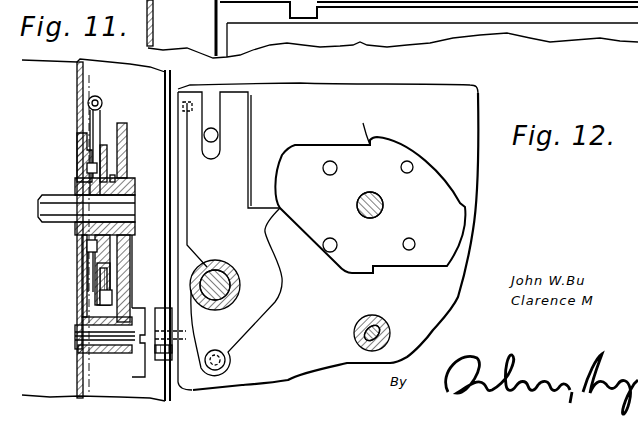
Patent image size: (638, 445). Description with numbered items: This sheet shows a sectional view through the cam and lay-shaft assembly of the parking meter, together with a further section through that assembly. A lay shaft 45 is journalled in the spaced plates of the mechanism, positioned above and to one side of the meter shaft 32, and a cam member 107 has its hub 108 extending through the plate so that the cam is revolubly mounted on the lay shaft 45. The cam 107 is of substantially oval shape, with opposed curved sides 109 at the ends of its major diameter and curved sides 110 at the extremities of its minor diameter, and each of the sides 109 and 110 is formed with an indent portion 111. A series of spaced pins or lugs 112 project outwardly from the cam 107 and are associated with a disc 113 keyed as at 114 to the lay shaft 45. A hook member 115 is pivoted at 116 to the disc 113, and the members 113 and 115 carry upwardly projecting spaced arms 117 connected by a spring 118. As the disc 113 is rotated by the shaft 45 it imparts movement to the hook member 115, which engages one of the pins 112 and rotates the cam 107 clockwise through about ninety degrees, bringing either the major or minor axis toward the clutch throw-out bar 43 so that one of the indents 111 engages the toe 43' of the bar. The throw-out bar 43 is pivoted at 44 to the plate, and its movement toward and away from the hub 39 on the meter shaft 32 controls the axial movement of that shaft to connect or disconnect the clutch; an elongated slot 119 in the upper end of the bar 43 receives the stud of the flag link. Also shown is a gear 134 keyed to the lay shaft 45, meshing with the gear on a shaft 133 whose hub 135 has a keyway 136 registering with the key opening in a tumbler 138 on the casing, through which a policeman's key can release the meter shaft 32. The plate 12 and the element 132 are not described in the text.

In FIG. 11, the plate 12 is at (76, 77).
In FIG. 12, the meter shaft 32 is at (218, 262).
In FIG. 12, the hub 39 is at (238, 285).
In FIG. 12, the clutch throw-out bar 43 is at (229, 179).
In FIG. 12, the toe 43' is at (242, 292).
In FIG. 12, the pivot 44 is at (226, 362).
In FIG. 11, the lay shaft 45 is at (57, 198).
In FIG. 12, the lay shaft 45 is at (383, 203).
In FIG. 11, the cam member 107 is at (85, 150).
In FIG. 12, the cam member 107 is at (397, 142).
In FIG. 11, the hub 108 is at (80, 235).
In FIG. 12, the curved sides 109 is at (285, 160).
In FIG. 12, the curved sides 110 is at (380, 137).
In FIG. 11, the indent portion 111 is at (82, 137).
In FIG. 12, the indent portion 111 is at (489, 187).
In FIG. 11, the pins or lugs 112 is at (82, 262).
In FIG. 12, the pins or lugs 112 is at (412, 163).
In FIG. 11, the member or disc 113 is at (128, 142).
In FIG. 11, the key 114 is at (125, 167).
In FIG. 11, the hook member 115 is at (100, 297).
In FIG. 11, the pivot 116 is at (98, 287).
In FIG. 11, the arms 117 is at (103, 107).
In FIG. 11, the spring 118 is at (102, 98).
In FIG. 12, the elongated slot 119 is at (221, 103).
In FIG. 11, the bolt 132 is at (123, 368).
In FIG. 12, the shaft 133 is at (387, 320).
In FIG. 11, the gear 134 is at (107, 150).
In FIG. 11, the hub 135 is at (134, 313).
In FIG. 11, the keyway 136 is at (142, 348).
In FIG. 12, the tumbler 138 is at (185, 381).